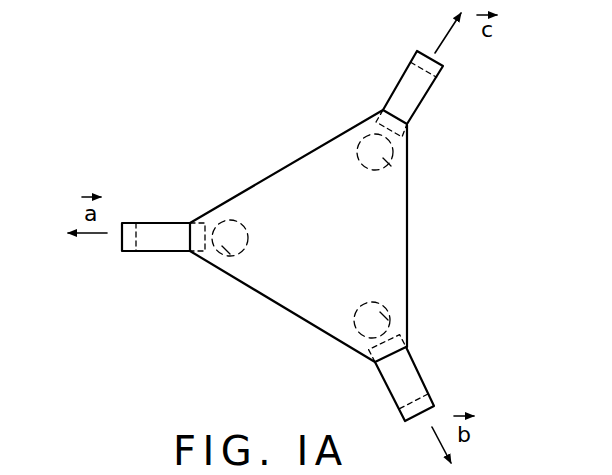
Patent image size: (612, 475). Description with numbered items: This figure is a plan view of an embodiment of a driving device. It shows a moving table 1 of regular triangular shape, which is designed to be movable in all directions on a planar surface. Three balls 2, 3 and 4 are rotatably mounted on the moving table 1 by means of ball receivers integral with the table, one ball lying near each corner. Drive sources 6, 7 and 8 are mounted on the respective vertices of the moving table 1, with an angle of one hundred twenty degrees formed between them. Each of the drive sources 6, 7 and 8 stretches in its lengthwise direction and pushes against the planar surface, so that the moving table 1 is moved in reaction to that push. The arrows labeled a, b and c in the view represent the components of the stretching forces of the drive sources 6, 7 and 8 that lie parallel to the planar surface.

The moving table 1 is at (301, 303).
The ball 2 is at (226, 252).
The ball 3 is at (387, 318).
The ball 4 is at (388, 162).
The drive source 6 is at (158, 232).
The drive source 7 is at (412, 380).
The drive source 8 is at (413, 98).